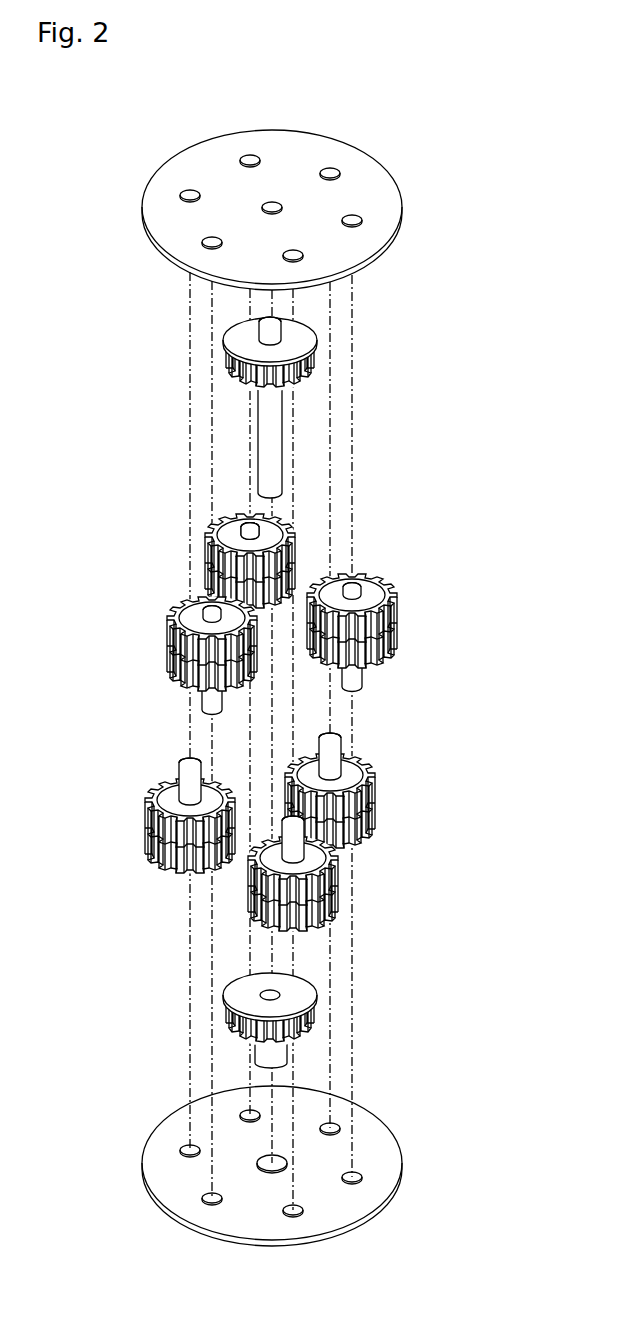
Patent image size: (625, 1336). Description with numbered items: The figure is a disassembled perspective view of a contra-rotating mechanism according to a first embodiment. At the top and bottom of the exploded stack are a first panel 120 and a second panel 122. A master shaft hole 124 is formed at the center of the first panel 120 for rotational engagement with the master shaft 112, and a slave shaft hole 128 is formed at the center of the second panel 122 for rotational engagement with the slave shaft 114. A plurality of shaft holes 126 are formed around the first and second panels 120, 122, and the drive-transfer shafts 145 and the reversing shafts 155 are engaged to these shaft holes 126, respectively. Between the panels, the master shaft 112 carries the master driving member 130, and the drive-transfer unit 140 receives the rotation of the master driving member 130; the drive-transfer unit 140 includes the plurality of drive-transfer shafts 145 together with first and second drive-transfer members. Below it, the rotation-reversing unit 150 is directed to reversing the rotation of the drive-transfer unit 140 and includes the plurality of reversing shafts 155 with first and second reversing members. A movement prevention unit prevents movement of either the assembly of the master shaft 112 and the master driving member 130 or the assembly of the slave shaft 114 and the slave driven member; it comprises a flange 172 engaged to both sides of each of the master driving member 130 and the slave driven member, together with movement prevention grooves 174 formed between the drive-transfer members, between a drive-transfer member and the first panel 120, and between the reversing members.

The master shaft 112 is at (217, 340).
The slave shaft 114 is at (247, 1058).
The first panel 120 is at (185, 218).
The second panel 122 is at (388, 1162).
The master shaft hole 124 is at (273, 198).
The shaft holes 126 is at (362, 219).
The slave shaft hole 128 is at (263, 1170).
The master driving member 130 is at (302, 330).
The drive-transfer unit 140 is at (260, 637).
The drive-transfer shafts 145 is at (200, 620).
The rotation-reversing unit 150 is at (245, 823).
The reversing shafts 155 is at (180, 772).
The flange 172 is at (243, 394).
The movement prevention groove 174 is at (207, 577).